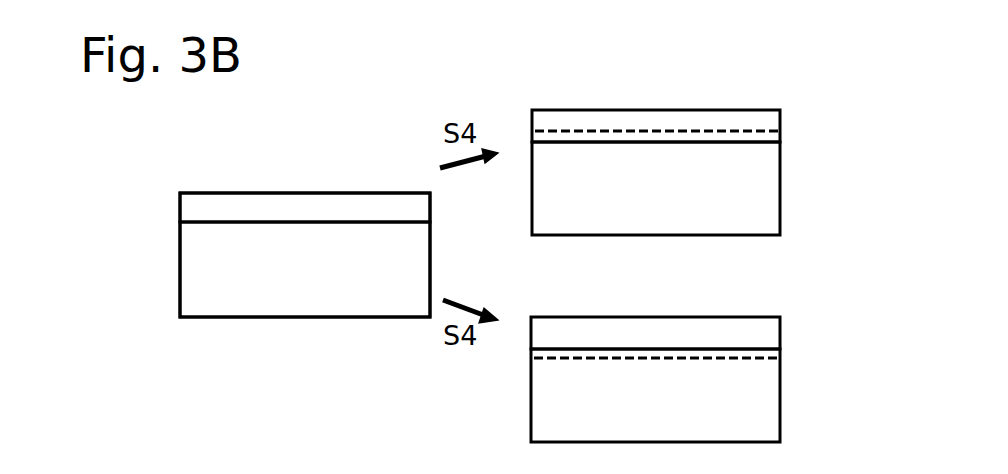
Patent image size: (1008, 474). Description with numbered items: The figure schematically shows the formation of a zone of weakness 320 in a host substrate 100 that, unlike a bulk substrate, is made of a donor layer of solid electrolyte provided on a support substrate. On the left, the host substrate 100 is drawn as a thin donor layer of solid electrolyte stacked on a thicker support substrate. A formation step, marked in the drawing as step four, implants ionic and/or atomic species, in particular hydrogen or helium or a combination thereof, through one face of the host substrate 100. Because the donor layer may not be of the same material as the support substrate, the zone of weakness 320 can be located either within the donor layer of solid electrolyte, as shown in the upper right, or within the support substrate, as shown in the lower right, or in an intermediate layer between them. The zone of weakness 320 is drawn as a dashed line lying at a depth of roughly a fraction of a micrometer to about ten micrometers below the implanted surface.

The host substrate 100 is at (200, 328).
The zone of weakness 320 is at (630, 131).